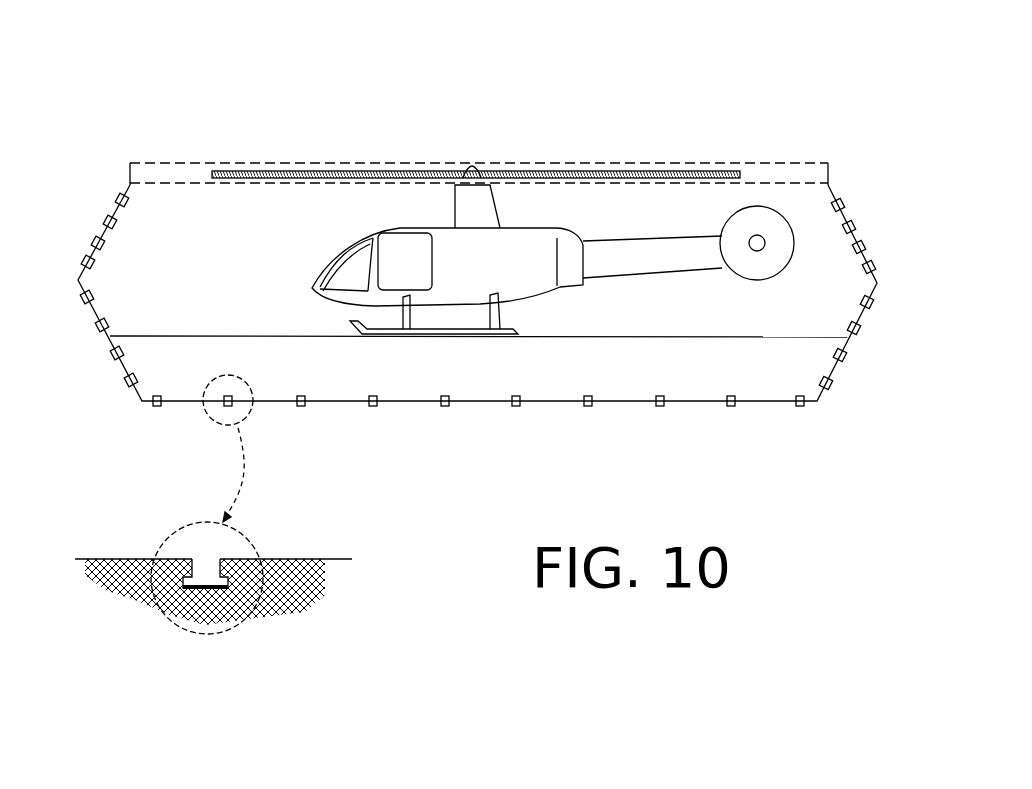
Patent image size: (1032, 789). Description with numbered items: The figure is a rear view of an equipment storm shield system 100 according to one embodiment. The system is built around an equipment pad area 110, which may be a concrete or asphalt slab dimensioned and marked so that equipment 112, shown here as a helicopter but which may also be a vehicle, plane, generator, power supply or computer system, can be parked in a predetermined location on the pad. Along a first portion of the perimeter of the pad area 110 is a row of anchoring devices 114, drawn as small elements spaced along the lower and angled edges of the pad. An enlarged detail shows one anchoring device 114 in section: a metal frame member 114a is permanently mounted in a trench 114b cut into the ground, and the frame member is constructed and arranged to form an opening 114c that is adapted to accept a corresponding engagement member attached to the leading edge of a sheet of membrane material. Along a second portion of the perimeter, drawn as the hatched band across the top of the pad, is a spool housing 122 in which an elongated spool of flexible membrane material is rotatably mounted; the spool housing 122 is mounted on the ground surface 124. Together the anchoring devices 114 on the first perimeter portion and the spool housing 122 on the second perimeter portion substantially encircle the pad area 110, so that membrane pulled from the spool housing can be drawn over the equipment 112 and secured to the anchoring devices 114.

The equipment storm shield system 100 is at (178, 128).
The equipment pad area 110 is at (233, 273).
The equipment 112 is at (505, 268).
The anchoring device 114 is at (252, 378).
The metal frame member 114a is at (222, 627).
The trench 114b is at (263, 590).
The opening 114c is at (205, 576).
The spool housing 122 is at (528, 163).
The ground surface 124 is at (130, 595).